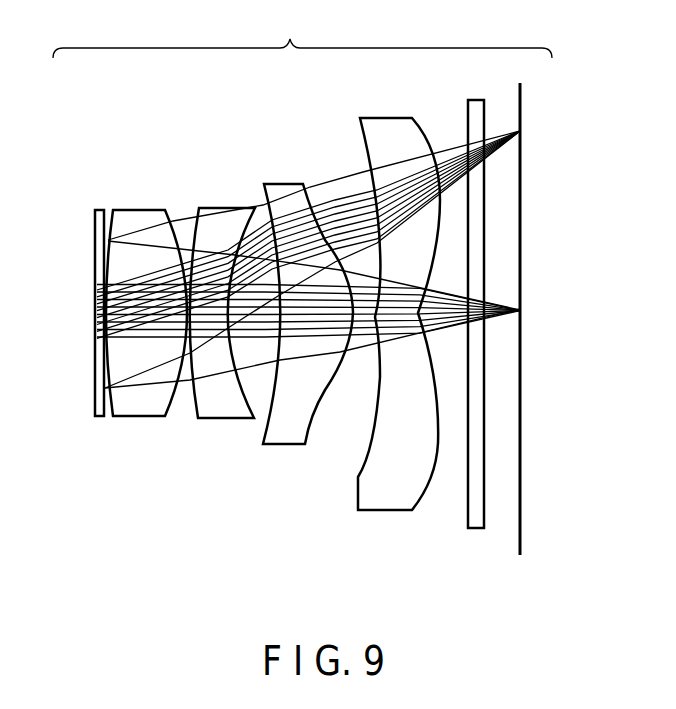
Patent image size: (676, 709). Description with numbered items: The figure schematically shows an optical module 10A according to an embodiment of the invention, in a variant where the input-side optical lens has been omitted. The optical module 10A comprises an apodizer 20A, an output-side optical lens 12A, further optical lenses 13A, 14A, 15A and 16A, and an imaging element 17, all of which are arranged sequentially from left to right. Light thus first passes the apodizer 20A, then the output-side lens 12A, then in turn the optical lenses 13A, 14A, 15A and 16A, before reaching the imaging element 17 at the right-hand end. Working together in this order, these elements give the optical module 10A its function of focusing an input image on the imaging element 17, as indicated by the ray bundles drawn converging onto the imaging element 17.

The optical module 10A is at (308, 33).
The apodizer 20A is at (100, 416).
The optical lens (output-side lens) 12A is at (140, 416).
The optical lens 13A is at (222, 418).
The optical lens 14A is at (283, 444).
The optical lens 15A is at (386, 510).
The optical lens 16A is at (474, 528).
The imaging element 17 is at (521, 518).